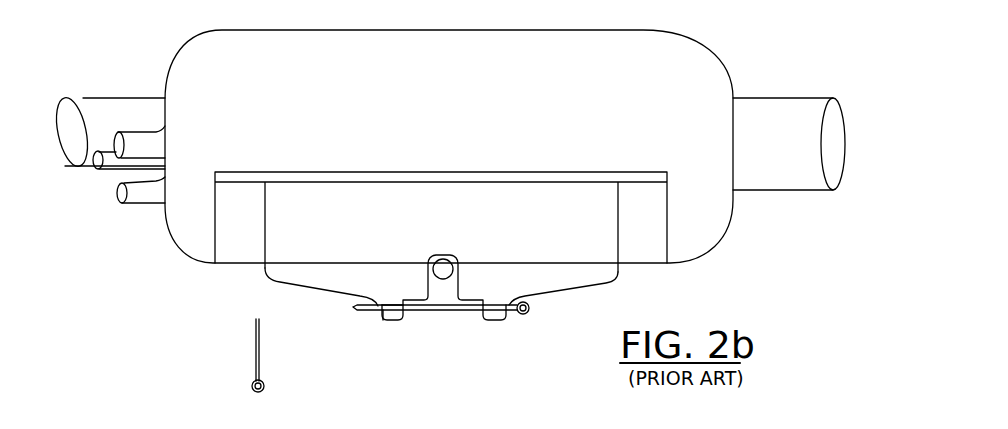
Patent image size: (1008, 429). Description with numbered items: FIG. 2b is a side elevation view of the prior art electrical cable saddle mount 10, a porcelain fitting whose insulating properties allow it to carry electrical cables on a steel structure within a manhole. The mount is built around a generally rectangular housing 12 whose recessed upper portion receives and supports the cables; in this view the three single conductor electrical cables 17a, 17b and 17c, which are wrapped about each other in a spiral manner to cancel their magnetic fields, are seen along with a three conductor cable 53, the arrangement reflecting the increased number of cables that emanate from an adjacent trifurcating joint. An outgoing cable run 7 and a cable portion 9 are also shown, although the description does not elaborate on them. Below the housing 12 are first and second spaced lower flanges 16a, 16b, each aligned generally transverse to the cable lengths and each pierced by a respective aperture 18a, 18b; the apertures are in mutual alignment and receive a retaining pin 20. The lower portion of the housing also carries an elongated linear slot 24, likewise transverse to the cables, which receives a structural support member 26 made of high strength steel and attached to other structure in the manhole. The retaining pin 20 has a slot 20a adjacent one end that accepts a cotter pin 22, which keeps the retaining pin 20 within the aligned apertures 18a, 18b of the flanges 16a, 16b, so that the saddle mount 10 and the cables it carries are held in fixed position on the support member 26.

The outlet pipe 7 is at (770, 88).
The tank body 9 is at (358, 93).
The cable saddle mount 10 is at (360, 339).
The housing 12 is at (369, 246).
The first lower flange 16a is at (395, 318).
The second lower flange 16b is at (506, 315).
The electrical cable 17a is at (100, 148).
The electrical cable 17b is at (148, 198).
The electrical cable 17c is at (155, 140).
The first aperture 18a is at (383, 322).
The second aperture 18b is at (490, 322).
The retaining pin 20 is at (438, 311).
The slot 20a is at (362, 310).
The cotter pin 22 is at (253, 362).
The elongated linear slot 24 is at (458, 258).
The structural support member 26 is at (430, 270).
The 3/c cable 53 is at (105, 93).